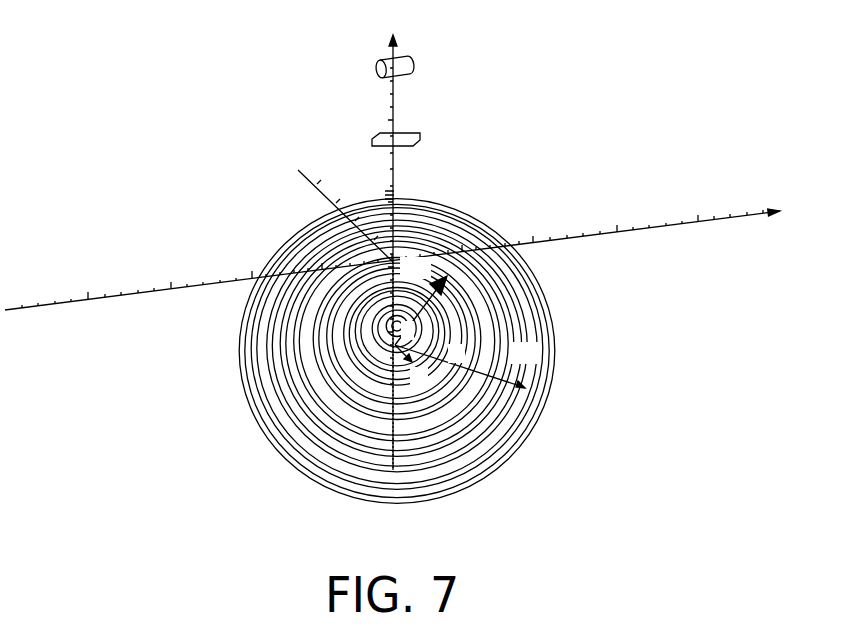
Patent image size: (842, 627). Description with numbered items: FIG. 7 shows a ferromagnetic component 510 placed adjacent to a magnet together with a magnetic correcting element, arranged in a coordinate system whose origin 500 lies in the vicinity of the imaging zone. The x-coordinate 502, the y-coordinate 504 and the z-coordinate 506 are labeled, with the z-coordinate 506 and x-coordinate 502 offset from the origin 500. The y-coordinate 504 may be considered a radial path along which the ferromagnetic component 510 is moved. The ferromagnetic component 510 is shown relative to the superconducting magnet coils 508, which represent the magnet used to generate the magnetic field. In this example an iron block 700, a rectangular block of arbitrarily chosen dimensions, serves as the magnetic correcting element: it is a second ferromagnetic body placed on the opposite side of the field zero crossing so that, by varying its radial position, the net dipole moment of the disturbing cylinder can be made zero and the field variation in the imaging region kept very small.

The origin of a coordinate system 500 is at (393, 348).
The x-coordinate 502 is at (675, 228).
The y-coordinate 504 is at (393, 157).
The z-coordinate 506 is at (298, 170).
The superconducting magnet coils 508 is at (621, 418).
The ferromagnetic component 510 is at (414, 63).
The iron block 700 is at (372, 138).